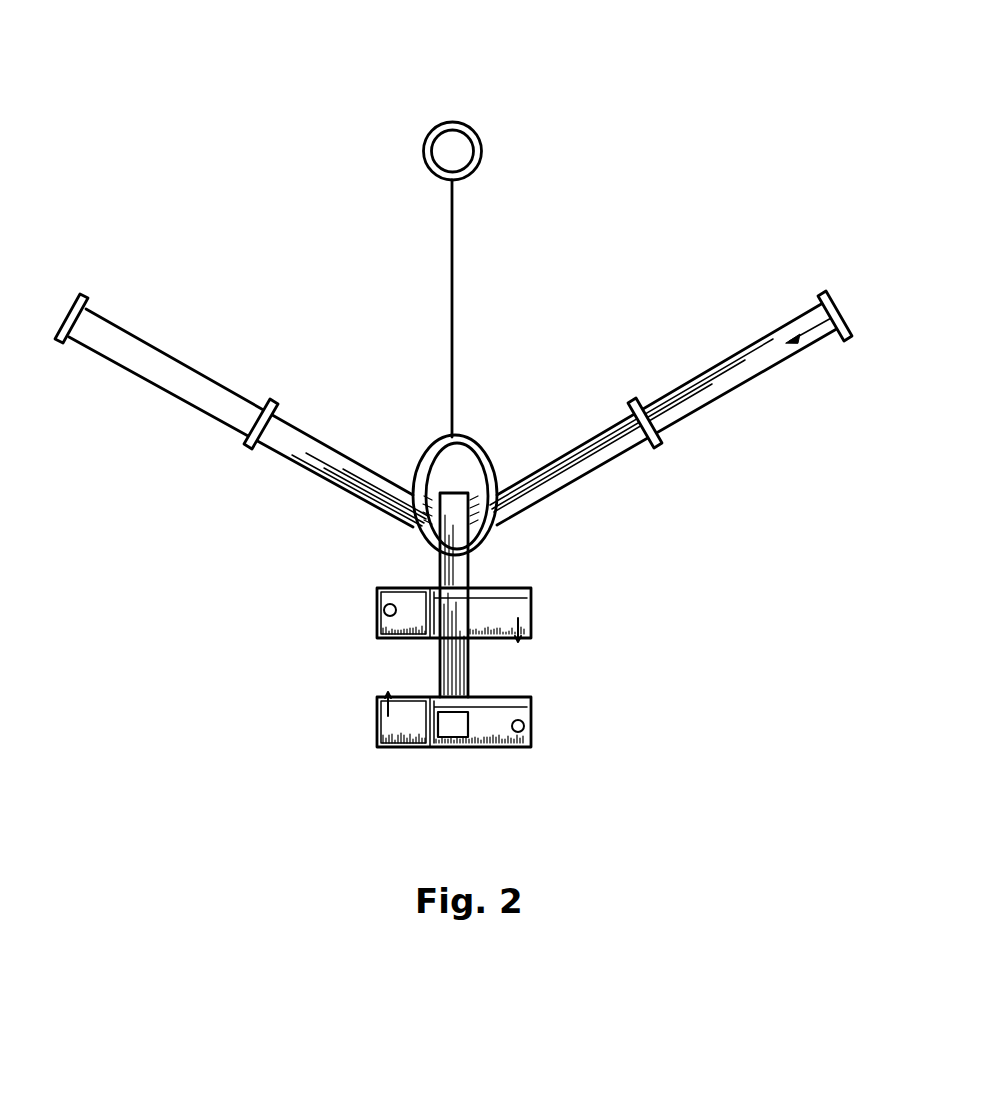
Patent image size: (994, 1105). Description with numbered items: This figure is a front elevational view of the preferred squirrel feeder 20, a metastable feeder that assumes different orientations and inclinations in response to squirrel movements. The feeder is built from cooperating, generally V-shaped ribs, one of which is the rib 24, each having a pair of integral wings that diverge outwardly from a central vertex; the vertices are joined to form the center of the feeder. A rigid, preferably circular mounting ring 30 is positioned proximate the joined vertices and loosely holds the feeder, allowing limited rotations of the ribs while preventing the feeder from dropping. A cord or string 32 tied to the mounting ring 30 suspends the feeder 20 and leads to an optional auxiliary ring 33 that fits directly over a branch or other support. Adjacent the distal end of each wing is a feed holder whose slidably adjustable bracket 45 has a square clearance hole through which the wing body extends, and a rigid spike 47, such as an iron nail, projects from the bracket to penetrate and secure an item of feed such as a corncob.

The squirrel feeder 20 is at (262, 148).
The V-shaped rib 24 is at (729, 329).
The mounting ring 30 is at (488, 453).
The cord or string 32 is at (453, 294).
The auxiliary ring 33 is at (471, 173).
The slidably adjustable bracket 45 is at (835, 309).
The rigid spike 47 is at (683, 401).